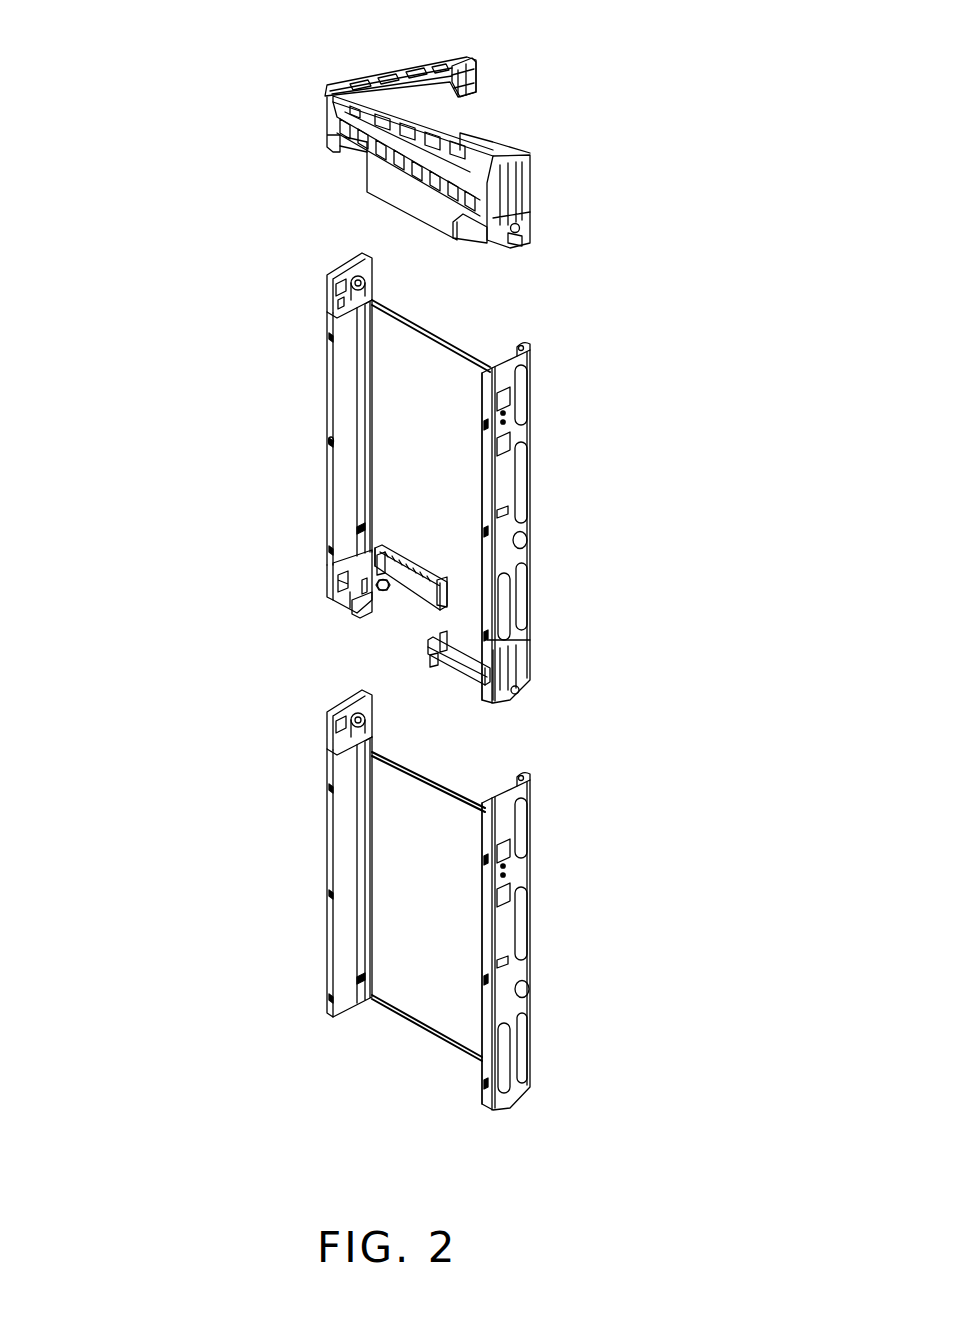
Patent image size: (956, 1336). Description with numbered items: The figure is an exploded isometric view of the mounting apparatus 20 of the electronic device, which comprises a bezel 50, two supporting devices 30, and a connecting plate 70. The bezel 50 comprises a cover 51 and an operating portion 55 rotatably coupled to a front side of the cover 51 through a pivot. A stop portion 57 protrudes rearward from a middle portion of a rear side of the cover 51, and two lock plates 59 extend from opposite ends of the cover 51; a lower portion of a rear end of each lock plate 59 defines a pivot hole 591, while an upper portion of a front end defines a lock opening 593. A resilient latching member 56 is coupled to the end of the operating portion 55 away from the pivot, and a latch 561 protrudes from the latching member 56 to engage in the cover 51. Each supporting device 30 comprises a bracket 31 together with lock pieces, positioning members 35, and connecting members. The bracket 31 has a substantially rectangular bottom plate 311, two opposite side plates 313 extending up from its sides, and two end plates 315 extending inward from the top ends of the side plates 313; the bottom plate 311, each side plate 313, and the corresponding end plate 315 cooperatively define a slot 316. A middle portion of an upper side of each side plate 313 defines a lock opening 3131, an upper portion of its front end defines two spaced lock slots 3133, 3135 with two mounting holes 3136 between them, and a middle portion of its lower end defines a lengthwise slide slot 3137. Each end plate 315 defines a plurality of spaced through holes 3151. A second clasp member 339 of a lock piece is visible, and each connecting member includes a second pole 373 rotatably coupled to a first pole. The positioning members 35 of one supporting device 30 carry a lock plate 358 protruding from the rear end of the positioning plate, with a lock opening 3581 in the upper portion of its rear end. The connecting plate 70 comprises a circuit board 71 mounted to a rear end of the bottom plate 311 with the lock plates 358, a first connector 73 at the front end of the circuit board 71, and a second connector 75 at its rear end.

The mounting apparatus 20 is at (143, 43).
The supporting device 30 is at (287, 402).
The bracket 31 is at (635, 542).
The positioning member 35 is at (350, 378).
The bezel 50 is at (232, 88).
The cover 51 is at (333, 130).
The operating portion 55 is at (337, 103).
The resilient latching member 56 is at (478, 60).
The latch 561 is at (482, 81).
The stop portion 57 is at (427, 213).
The lock plate 59 is at (523, 240).
The pivot hole 591 is at (522, 230).
The lock opening 593 is at (522, 228).
The connecting plate 70 is at (198, 588).
The circuit board 71 is at (417, 607).
The first connector 73 is at (357, 600).
The second connector 75 is at (432, 662).
The bottom plate 311 is at (457, 570).
The side plate 313 is at (507, 552).
The end plate 315 is at (485, 615).
The slot 316 is at (525, 347).
The lock opening 3131 is at (506, 512).
The lock slot 3133 is at (512, 454).
The lock slot 3135 is at (513, 389).
The mounting hole 3136 is at (510, 420).
The slide slot 3137 is at (523, 483).
The through hole 3151 is at (330, 440).
The second clasp member 339 is at (343, 287).
The lock plate 358 is at (340, 560).
The lock opening 3581 is at (345, 578).
The second pole 373 is at (350, 273).